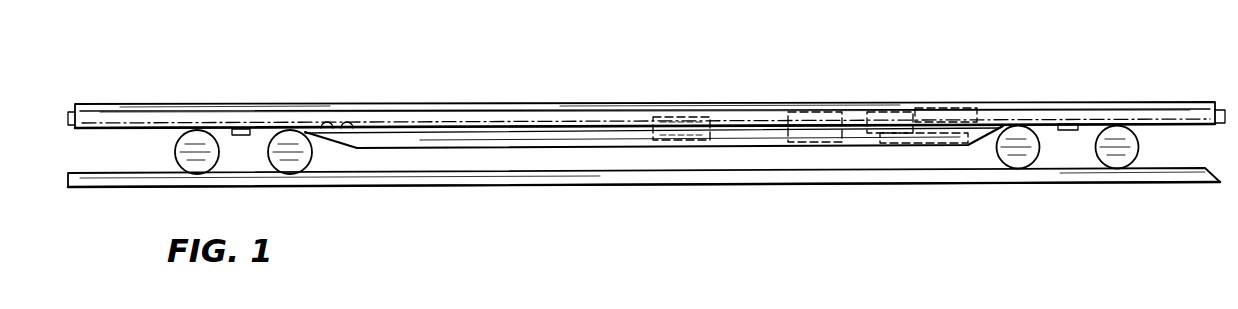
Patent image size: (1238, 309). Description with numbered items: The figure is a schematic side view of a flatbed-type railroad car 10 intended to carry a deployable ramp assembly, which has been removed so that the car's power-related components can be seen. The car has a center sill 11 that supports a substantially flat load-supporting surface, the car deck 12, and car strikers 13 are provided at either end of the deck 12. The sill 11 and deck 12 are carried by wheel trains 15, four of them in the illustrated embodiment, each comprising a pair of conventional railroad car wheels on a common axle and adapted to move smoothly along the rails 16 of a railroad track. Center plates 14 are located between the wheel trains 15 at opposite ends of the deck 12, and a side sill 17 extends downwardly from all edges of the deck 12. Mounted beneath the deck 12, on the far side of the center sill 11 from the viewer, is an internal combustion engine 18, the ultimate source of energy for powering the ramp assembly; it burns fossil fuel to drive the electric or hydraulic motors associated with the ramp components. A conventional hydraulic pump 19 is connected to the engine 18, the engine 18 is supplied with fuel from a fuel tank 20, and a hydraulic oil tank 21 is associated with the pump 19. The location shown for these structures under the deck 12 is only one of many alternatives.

The railroad car 10 is at (538, 80).
The center sill 11 is at (420, 143).
The car deck 12 is at (758, 103).
The car strikers 13 is at (70, 110).
The center plates 14 is at (240, 136).
The wheel trains 15 is at (175, 167).
The rails 16 is at (705, 172).
The side sill 17 is at (380, 113).
The internal combustion engine 18 is at (970, 110).
The hydraulic pump 19 is at (884, 112).
The fuel tank 20 is at (655, 120).
The hydraulic oil tank 21 is at (808, 112).